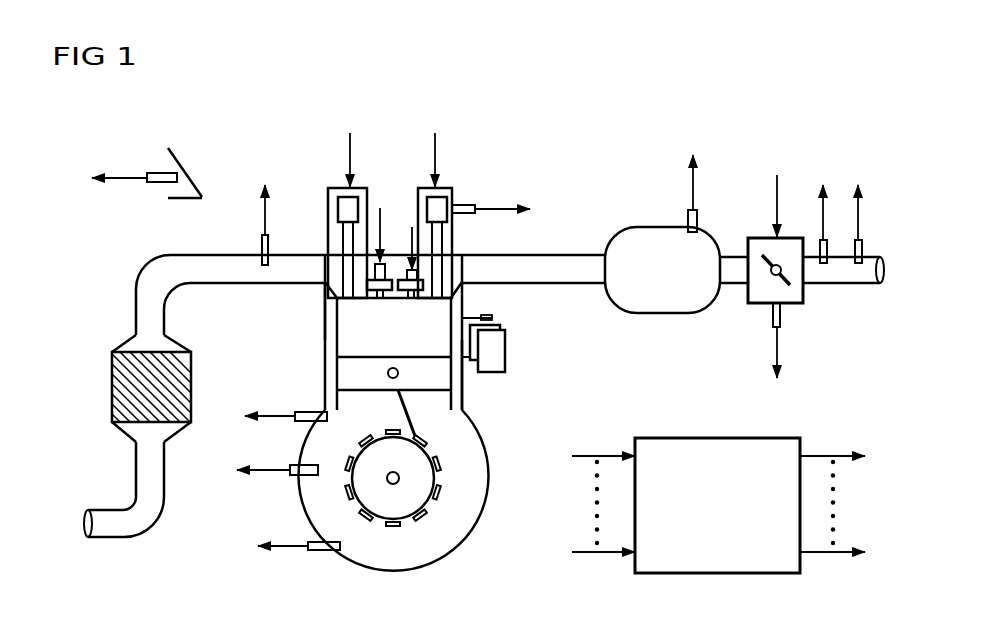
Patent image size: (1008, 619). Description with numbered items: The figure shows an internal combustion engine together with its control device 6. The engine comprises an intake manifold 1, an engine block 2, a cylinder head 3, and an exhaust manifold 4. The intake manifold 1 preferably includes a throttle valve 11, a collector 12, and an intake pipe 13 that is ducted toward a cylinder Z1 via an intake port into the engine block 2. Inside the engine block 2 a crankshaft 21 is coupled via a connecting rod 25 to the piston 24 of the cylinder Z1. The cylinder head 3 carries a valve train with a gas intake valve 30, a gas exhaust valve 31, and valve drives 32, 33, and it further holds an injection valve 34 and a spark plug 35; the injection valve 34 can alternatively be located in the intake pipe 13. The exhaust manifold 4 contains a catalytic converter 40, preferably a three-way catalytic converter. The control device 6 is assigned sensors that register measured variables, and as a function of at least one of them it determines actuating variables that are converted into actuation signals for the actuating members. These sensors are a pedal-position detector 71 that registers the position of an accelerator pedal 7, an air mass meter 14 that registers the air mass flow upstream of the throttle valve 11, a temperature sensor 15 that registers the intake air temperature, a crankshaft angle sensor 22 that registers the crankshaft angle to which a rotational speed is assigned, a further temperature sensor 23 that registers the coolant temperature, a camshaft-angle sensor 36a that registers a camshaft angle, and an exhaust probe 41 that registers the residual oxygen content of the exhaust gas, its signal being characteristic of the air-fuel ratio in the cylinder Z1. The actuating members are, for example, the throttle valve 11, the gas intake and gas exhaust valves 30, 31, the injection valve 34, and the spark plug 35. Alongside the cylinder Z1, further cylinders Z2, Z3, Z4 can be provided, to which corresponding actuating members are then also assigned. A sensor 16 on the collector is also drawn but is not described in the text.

The intake manifold 1 is at (672, 335).
The engine block 2 is at (308, 330).
The cylinder head 3 is at (455, 130).
The exhaust manifold 4 is at (112, 312).
The control device 6 is at (717, 438).
The accelerator pedal 7 is at (187, 168).
The throttle valve 11 is at (761, 300).
The collector 12 is at (640, 235).
The intake pipe 13 is at (565, 256).
The air mass meter 14 is at (862, 268).
The temperature sensor 15 is at (827, 268).
The intake pipe pressure sensor 16 is at (700, 215).
The crankshaft 21 is at (395, 482).
The crankshaft angle sensor 22 is at (293, 475).
The further temperature sensor 23 is at (302, 412).
The piston 24 is at (420, 392).
The connecting rod 25 is at (315, 550).
The gas intake valve 30 is at (437, 300).
The gas exhaust valve 31 is at (325, 313).
The valve drive 32 is at (430, 197).
The valve drive 33 is at (340, 197).
The injection valve 34 is at (410, 300).
The spark plug 35 is at (380, 300).
The camshaft-angle sensor 36a is at (462, 205).
The catalytic converter 40 is at (112, 378).
The exhaust probe 41 is at (262, 247).
The pedal-position detector 71 is at (157, 173).
The cylinder Z1 is at (462, 375).
The further cylinder Z2 is at (500, 345).
The further cylinder Z3 is at (505, 333).
The further cylinder Z4 is at (493, 318).